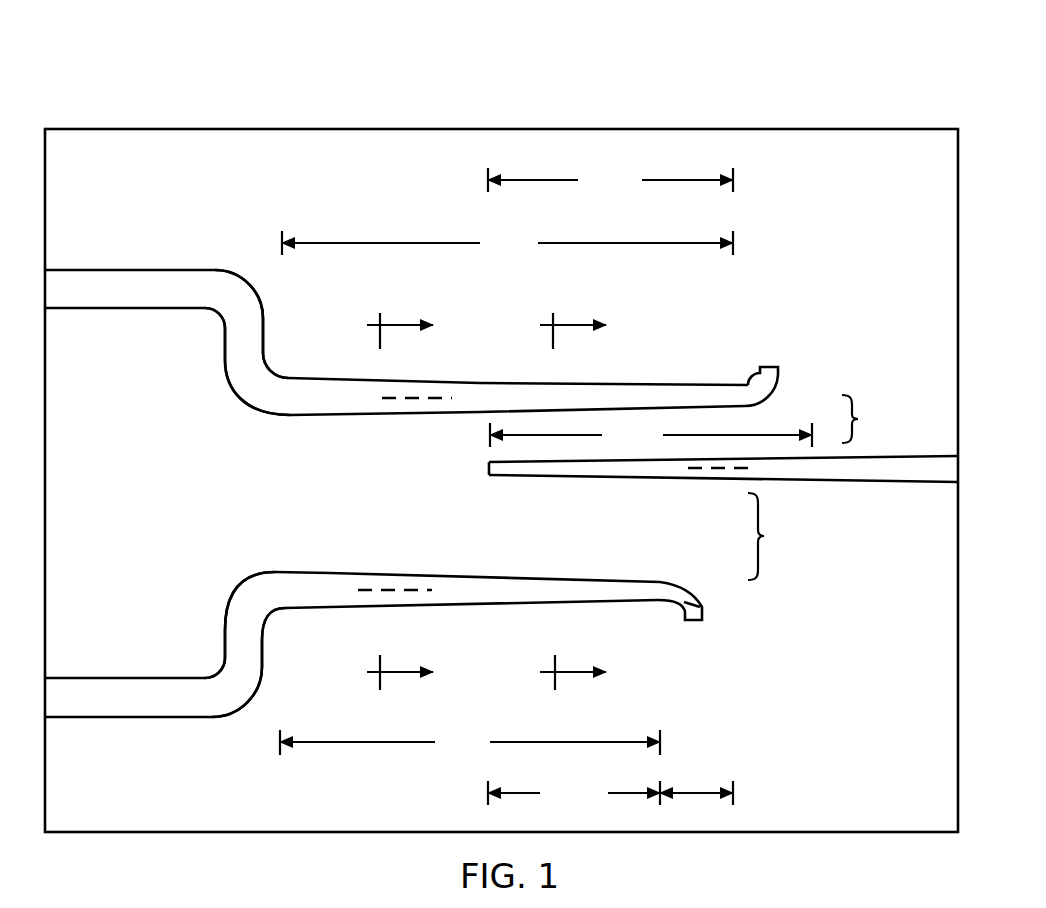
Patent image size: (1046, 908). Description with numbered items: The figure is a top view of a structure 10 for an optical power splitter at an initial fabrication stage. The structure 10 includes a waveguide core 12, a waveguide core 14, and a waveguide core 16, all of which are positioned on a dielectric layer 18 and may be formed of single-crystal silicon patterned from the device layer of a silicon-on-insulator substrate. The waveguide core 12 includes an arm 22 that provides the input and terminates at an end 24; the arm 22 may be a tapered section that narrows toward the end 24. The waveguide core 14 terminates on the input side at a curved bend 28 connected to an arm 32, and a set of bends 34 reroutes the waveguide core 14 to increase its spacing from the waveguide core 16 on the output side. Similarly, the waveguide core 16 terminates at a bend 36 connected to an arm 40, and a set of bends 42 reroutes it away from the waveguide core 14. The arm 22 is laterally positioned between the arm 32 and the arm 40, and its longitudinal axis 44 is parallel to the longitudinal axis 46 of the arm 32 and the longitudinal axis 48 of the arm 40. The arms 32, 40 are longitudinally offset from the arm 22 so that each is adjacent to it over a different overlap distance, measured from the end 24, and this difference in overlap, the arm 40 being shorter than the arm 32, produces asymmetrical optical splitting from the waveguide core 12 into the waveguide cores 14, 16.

The structure 10 is at (120, 94).
The waveguide core 12 is at (913, 490).
The waveguide core 14 is at (140, 257).
The waveguide core 16 is at (147, 732).
The dielectric layer 18 is at (926, 812).
The arm 22 is at (623, 468).
The end 24 is at (489, 472).
The bend 28 is at (748, 390).
The arm 32 is at (537, 398).
The set of bends 34 is at (248, 364).
The bend 36 is at (702, 607).
The arm 40 is at (517, 592).
The set of bends 42 is at (243, 628).
The longitudinal axis 44 is at (723, 470).
The longitudinal axis 46 is at (420, 398).
The longitudinal axis 48 is at (398, 592).